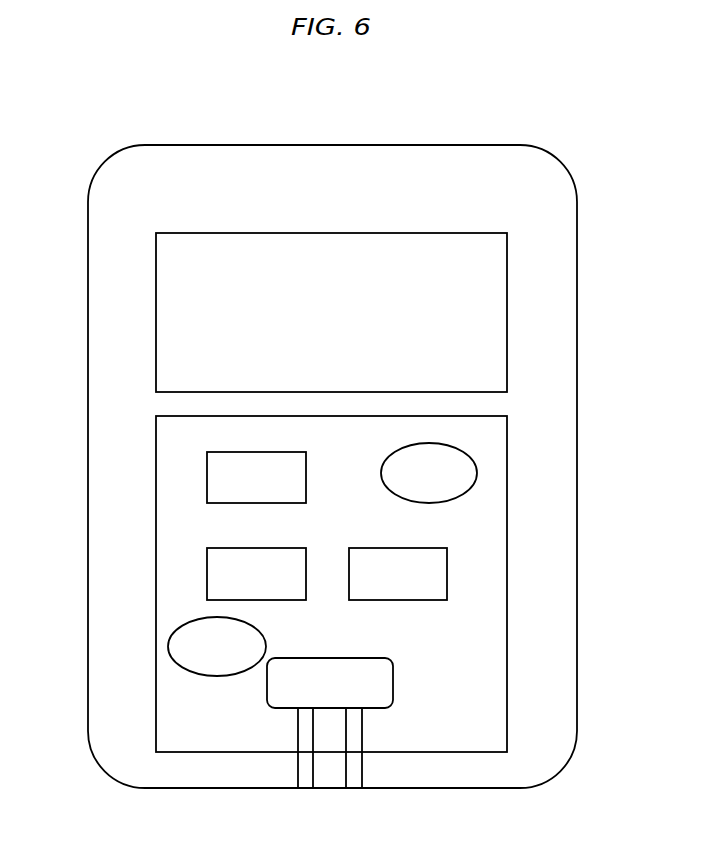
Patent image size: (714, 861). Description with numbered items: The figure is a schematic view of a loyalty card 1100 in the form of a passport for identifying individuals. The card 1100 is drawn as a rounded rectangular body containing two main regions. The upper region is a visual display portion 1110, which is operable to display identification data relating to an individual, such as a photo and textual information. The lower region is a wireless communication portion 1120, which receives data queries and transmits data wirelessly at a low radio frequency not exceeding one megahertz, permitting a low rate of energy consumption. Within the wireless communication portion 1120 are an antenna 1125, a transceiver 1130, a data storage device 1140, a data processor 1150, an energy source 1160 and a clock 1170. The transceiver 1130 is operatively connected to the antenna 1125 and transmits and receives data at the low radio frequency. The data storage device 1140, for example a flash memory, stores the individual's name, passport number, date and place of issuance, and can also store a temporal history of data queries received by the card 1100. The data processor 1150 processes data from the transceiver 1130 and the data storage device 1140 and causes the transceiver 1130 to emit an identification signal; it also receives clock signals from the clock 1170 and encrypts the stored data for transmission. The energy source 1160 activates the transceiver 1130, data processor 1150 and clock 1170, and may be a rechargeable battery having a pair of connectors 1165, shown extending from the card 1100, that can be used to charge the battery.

The loyalty card 1100 is at (78, 84).
The visual display portion 1110 is at (167, 273).
The wireless communication portion 1120 is at (176, 493).
The antenna 1125 is at (381, 468).
The transceiver 1130 is at (223, 452).
The data storage device 1140 is at (366, 548).
The data processor 1150 is at (223, 548).
The energy source 1160 is at (395, 680).
The connectors 1165 is at (303, 792).
The clock 1170 is at (215, 677).